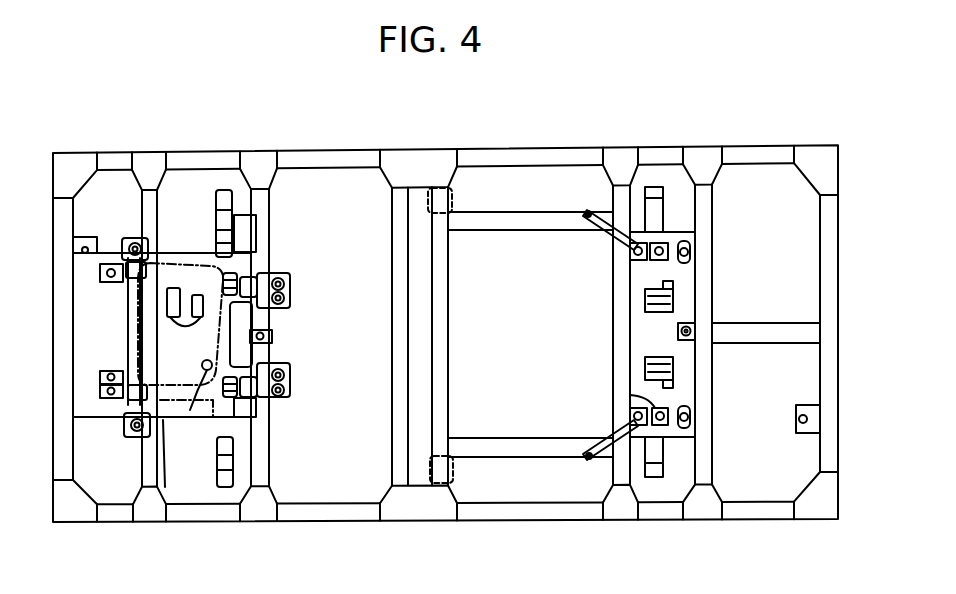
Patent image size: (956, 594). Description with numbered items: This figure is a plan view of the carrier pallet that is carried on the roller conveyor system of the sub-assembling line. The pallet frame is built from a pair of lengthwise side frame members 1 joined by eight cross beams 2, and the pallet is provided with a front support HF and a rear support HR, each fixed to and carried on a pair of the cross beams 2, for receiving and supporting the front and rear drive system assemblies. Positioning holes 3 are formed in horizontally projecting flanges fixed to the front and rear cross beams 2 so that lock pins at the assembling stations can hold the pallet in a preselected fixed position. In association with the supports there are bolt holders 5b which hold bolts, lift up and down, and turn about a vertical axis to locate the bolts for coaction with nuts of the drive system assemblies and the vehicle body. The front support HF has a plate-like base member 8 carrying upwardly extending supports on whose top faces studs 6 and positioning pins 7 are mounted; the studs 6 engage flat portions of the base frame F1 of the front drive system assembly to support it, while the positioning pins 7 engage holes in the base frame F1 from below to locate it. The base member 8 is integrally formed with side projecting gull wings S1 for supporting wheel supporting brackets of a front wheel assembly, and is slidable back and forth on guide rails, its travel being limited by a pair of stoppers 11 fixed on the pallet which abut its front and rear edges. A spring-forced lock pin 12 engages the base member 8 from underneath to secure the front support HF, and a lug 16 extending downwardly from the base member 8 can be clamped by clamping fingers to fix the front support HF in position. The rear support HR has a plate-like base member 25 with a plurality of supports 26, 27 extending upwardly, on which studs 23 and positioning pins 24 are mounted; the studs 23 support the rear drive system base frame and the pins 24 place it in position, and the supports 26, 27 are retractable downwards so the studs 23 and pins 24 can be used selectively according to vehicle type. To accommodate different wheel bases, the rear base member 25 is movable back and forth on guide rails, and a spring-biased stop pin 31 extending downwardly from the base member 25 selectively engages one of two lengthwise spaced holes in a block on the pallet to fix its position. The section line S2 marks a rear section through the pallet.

The lengthwise side frame member 1 is at (348, 152).
The cross beam 2 is at (53, 466).
The positioning hole 3 is at (85, 246).
The bolt holder 5b is at (133, 244).
The stud 6 is at (222, 262).
The positioning pin 7 is at (280, 432).
The plate-like base member 8 is at (172, 418).
The stopper 11 is at (118, 318).
The lock pin 12 is at (188, 405).
The lug 16 is at (180, 380).
The stud 23 is at (673, 303).
The positioning pin 24 is at (649, 336).
The plate-like base member 25 is at (630, 302).
The support 26 is at (588, 213).
The support 27 is at (597, 228).
The stop pin 31 is at (690, 326).
The gull wing S1 is at (222, 190).
The rear section line S2 is at (705, 150).
The base frame F1 is at (177, 191).
The front support HF is at (288, 258).
The rear support HR is at (606, 358).